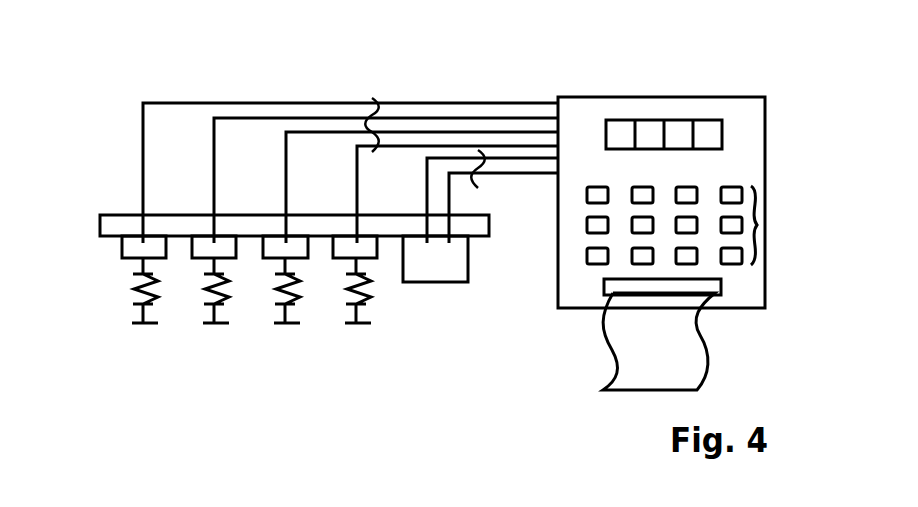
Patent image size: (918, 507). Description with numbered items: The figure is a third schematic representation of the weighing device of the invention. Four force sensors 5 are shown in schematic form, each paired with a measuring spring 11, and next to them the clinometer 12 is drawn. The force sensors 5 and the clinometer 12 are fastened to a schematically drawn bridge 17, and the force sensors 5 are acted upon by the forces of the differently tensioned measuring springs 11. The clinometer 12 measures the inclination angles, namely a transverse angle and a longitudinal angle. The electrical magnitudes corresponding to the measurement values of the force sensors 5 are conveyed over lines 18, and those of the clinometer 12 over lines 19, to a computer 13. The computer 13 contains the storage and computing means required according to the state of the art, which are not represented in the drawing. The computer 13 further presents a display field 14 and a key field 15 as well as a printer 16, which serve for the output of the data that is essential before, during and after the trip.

The force sensor 5 is at (135, 247).
The measuring spring 11 is at (140, 320).
The clinometer 12 is at (437, 257).
The computer 13 is at (732, 163).
The display field 14 is at (683, 120).
The key field 15 is at (763, 223).
The printer 16 is at (718, 292).
The bridge 17 is at (113, 225).
The lines 18 is at (380, 130).
The lines 19 is at (482, 172).